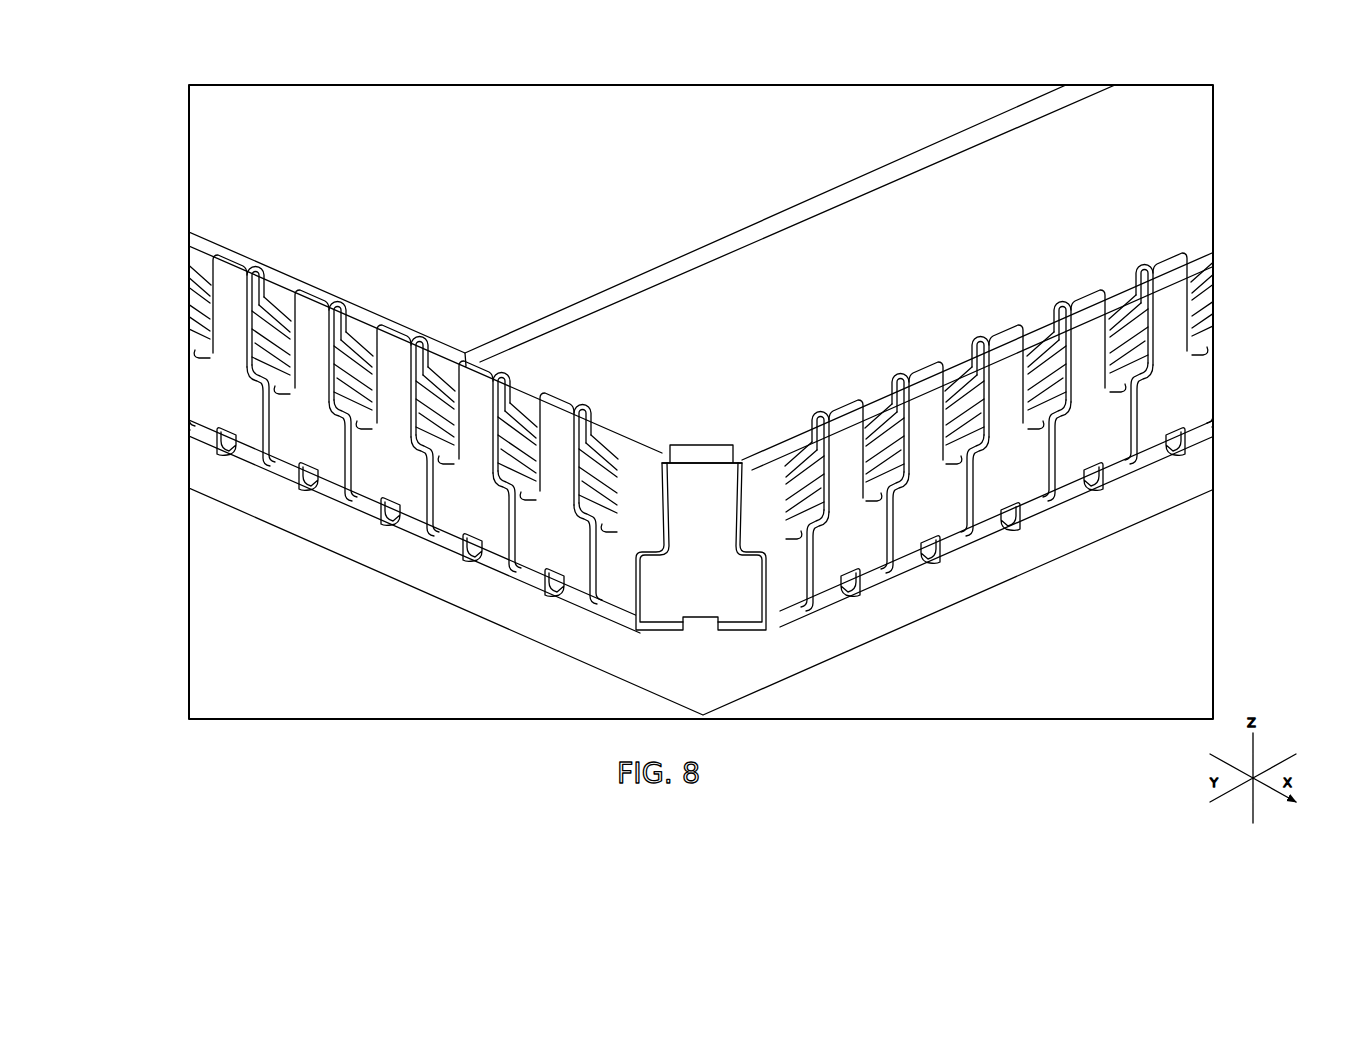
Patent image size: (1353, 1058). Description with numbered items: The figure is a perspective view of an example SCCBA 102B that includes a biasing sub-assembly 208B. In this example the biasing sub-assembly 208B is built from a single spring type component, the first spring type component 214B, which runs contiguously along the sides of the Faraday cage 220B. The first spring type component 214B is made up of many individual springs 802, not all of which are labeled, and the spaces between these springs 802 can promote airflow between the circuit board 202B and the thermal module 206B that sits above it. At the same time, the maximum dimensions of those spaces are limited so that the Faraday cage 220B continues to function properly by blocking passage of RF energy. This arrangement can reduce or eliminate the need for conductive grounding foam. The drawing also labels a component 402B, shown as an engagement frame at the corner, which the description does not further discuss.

The SCCBA 102B is at (208, 58).
The Faraday cage 220B is at (1217, 124).
The first spring type component 214B is at (396, 320).
The thermal module 206B is at (790, 223).
The springs 802 is at (835, 395).
The biasing sub-assembly 208B is at (361, 637).
The engagement frame 402B is at (622, 563).
The circuit board 202B is at (814, 665).